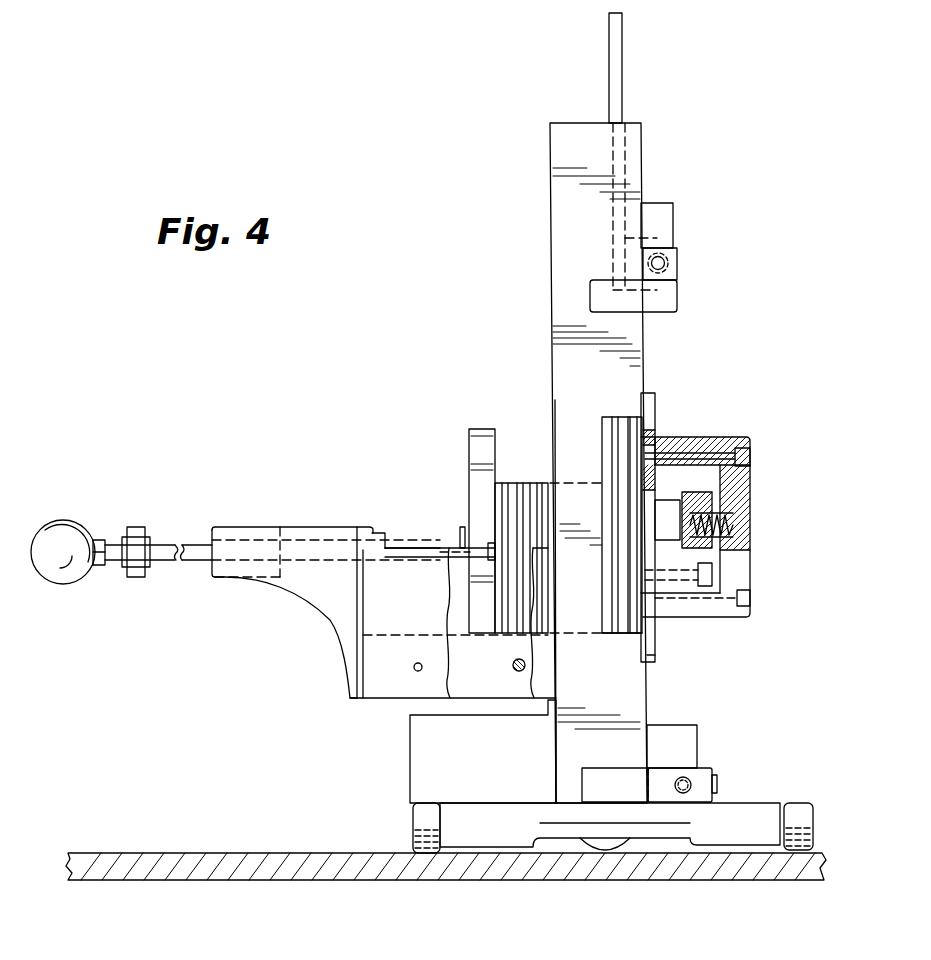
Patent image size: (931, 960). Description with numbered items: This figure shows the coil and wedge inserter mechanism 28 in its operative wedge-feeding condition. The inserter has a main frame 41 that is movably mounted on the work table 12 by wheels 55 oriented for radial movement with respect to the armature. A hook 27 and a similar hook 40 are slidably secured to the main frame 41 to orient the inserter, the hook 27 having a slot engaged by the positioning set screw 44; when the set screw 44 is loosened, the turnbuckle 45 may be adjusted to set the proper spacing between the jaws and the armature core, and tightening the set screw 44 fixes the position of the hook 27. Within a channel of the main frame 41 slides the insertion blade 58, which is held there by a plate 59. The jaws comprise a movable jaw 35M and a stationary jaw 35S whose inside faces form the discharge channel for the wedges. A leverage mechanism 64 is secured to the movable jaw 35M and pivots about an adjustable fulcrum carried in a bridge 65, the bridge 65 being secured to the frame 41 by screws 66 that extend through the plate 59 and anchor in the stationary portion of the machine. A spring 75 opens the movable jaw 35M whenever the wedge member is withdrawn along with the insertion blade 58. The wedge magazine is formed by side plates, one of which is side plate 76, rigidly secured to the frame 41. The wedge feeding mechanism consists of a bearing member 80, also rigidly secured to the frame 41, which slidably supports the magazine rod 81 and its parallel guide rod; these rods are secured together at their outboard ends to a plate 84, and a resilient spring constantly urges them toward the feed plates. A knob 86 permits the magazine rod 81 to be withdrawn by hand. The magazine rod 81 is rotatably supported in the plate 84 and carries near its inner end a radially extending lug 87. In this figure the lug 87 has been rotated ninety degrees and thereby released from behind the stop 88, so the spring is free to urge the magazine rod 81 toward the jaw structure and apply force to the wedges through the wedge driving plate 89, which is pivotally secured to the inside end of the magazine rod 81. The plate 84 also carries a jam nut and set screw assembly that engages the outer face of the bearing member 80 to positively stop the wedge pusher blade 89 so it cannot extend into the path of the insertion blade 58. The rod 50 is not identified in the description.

The work table 12 is at (318, 876).
The hook 27 is at (592, 778).
The inserter mechanism 28 is at (540, 364).
The movable jaw 35M is at (631, 417).
The stationary jaw 35S is at (604, 418).
The hook 40 is at (661, 307).
The main frame 41 is at (643, 366).
The positioning set screw 44 is at (714, 782).
The turnbuckle 45 is at (684, 776).
The rod 50 is at (612, 40).
The wheels 55 is at (413, 828).
The insertion blade 58 is at (624, 635).
The plate 59 is at (656, 641).
The leverage mechanism 64 is at (713, 500).
The bridge 65 is at (712, 438).
The screws 66 is at (752, 456).
The spring 75 is at (735, 523).
The side plate 76 is at (383, 682).
The bearing member 80 is at (248, 527).
The magazine rod 81 is at (448, 548).
The plate 84 is at (137, 573).
The knob 86 is at (68, 583).
The lug 87 is at (462, 527).
The stop 88 is at (378, 530).
The wedge driving plate 89 is at (490, 444).